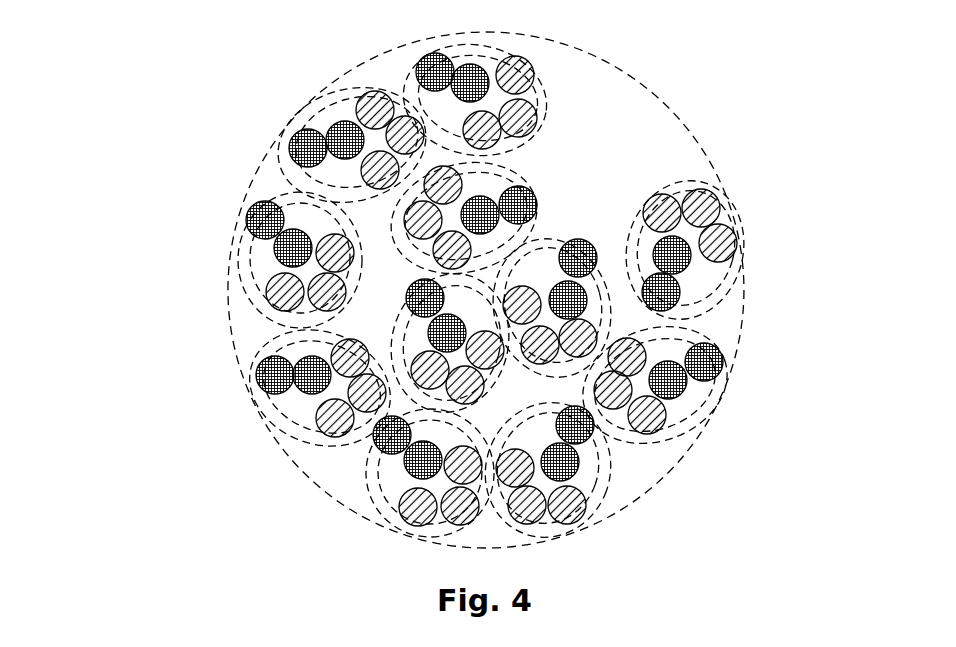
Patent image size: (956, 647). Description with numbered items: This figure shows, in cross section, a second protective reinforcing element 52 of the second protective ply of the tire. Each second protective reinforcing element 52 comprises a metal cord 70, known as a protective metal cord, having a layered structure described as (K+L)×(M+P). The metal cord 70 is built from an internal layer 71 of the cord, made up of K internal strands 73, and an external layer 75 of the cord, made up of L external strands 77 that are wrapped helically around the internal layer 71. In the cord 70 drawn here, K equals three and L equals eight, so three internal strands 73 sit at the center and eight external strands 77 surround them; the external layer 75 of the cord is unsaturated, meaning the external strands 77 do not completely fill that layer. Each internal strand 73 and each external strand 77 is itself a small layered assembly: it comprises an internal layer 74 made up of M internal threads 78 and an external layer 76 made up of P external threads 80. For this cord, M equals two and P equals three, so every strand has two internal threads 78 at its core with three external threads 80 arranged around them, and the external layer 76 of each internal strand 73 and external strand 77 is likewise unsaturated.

The second protective reinforcing element 52 is at (165, 245).
The metal cord 70 is at (232, 355).
The internal layer of the cord 71 is at (608, 216).
The internal strand 73 is at (417, 282).
The internal layer of the strand 74 is at (318, 125).
The external layer of the cord 75 is at (734, 328).
The external layer of the strand 76 is at (546, 87).
The external strand 77 is at (736, 290).
The internal thread 78 is at (308, 150).
The external thread 80 is at (522, 58).